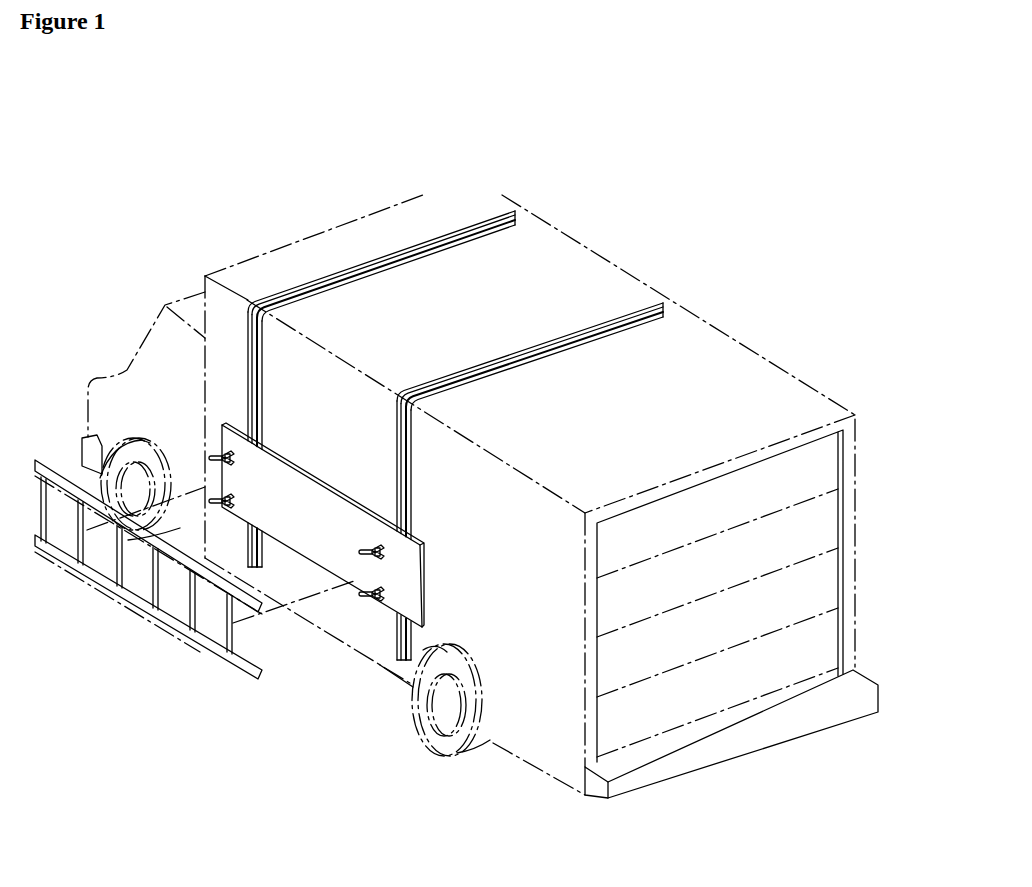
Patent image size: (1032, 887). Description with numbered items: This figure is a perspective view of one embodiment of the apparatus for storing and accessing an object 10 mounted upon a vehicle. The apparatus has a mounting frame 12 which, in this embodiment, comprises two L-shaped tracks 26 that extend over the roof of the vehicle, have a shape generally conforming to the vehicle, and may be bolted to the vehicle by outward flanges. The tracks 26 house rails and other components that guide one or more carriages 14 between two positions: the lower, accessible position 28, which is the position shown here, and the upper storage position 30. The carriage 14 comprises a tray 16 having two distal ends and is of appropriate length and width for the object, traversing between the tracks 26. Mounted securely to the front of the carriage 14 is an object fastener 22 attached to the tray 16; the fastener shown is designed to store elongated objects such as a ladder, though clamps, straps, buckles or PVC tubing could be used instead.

The apparatus for storing and accessing an object 10 is at (65, 234).
The mounting frame 12 is at (270, 374).
The carriage 14 is at (449, 595).
The tray 16 is at (356, 588).
The object fastener 22 is at (225, 480).
The L-shaped tracks 26 is at (296, 302).
The lower, accessible position 28 is at (275, 574).
The upper storage position 30 is at (500, 284).